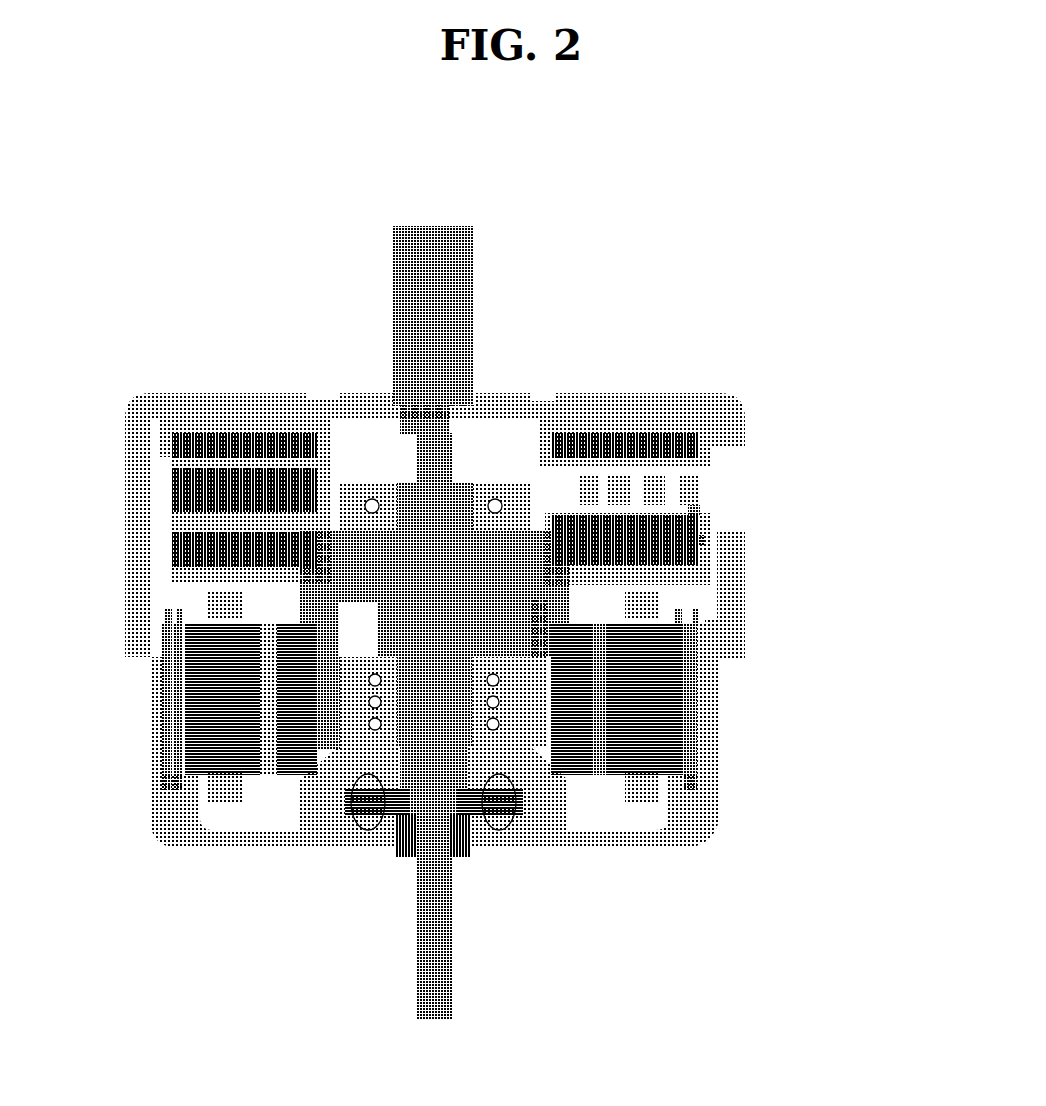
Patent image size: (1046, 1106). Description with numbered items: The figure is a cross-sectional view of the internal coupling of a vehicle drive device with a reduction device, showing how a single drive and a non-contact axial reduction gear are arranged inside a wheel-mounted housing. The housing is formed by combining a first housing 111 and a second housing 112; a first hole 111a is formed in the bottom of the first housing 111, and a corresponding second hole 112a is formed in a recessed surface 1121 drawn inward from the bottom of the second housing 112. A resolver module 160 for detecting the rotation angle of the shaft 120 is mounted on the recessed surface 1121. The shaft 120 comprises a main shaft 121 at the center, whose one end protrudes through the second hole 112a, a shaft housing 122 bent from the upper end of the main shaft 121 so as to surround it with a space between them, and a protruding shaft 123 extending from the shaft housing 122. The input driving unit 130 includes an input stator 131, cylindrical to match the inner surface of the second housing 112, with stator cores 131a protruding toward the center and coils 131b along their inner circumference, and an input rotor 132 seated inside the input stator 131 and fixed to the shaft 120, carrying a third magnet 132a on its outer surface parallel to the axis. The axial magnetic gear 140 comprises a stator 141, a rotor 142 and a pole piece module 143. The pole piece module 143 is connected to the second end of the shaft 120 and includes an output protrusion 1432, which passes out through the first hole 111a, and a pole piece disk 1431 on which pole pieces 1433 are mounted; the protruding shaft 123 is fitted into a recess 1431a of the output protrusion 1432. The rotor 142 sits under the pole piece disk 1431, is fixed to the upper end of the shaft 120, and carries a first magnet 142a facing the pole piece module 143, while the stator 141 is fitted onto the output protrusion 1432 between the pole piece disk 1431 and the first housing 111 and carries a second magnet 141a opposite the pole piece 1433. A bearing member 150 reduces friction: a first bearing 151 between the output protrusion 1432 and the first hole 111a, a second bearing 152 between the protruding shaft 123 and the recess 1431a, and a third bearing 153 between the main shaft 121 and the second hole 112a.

The first housing 111 is at (133, 458).
The first hole 111a is at (558, 395).
The second housing 112 is at (157, 738).
The second hole 112a is at (378, 848).
The recessed surface 1121 is at (552, 848).
The shaft 120 is at (445, 975).
The main shaft 121 is at (170, 693).
The shaft housing 122 is at (397, 643).
The protruding shaft 123 is at (300, 528).
The input driving unit 130 is at (753, 683).
The input stator 131 is at (754, 661).
The stator cores 131a is at (690, 670).
The coils 131b is at (650, 603).
The input rotor 132 is at (717, 802).
The third magnet 132a is at (710, 757).
The axial magnetic gear 140 is at (707, 500).
The stator 141 is at (262, 435).
The second magnet 141a is at (210, 435).
The rotor 142 is at (170, 547).
The first magnet 142a is at (170, 515).
The pole piece module 143 is at (436, 331).
The pole piece disk 1431 is at (494, 349).
The recess 1431a is at (468, 400).
The output protrusion 1432 is at (415, 236).
The pole piece 1433 is at (305, 393).
The bearing member 150 is at (445, 755).
The first bearing 151 is at (690, 510).
The second bearing 152 is at (700, 540).
The third bearing 153 is at (243, 763).
The resolver module 160 is at (485, 848).